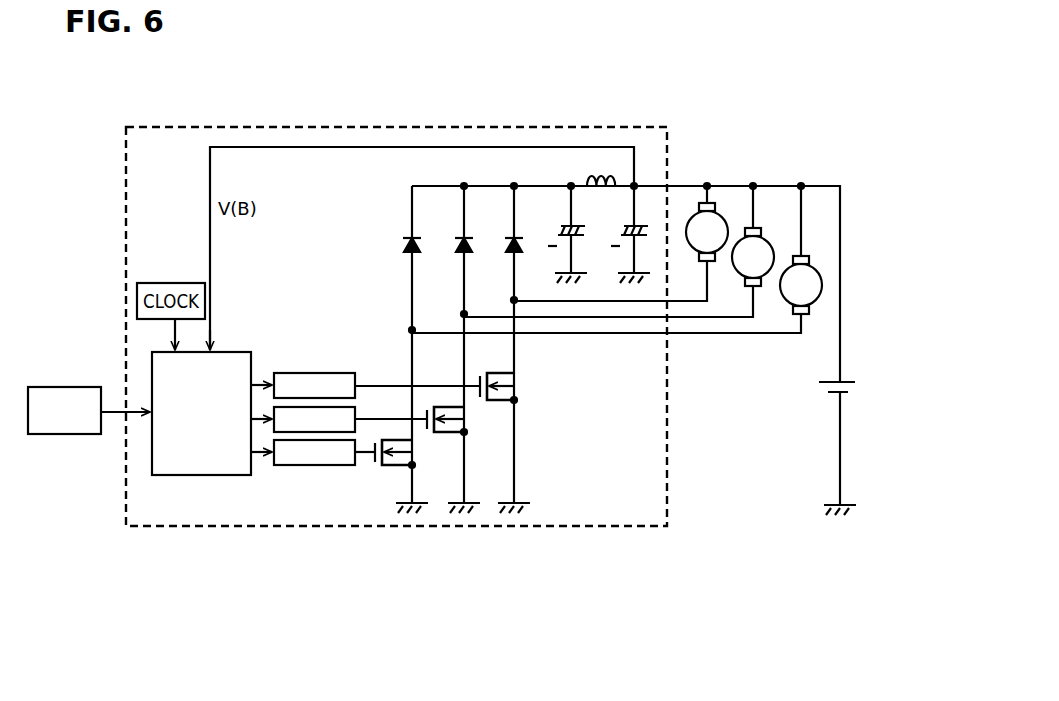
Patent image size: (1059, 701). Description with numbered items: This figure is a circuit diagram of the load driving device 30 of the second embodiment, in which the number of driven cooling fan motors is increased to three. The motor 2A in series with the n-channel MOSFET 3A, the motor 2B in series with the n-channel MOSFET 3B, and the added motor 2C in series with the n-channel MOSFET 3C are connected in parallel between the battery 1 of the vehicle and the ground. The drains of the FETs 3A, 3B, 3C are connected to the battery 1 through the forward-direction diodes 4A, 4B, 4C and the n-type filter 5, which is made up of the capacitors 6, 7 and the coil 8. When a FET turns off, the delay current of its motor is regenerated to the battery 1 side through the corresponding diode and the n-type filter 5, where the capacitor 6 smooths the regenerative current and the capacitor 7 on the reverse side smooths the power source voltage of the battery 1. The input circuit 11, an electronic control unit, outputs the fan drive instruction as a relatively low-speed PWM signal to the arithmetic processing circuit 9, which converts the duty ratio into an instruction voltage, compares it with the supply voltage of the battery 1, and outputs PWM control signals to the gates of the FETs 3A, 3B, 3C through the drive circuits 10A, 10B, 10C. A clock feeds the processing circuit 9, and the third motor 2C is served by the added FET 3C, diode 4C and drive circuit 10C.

The load driving device 30 is at (389, 126).
The arithmetic processing circuit 9 is at (184, 477).
The input circuit 11 is at (63, 386).
The drive circuit 10A is at (315, 373).
The drive circuit 10B is at (355, 407).
The drive circuit 10C is at (310, 465).
The n-channel MOSFET 3A is at (517, 402).
The n-channel MOSFET 3B is at (467, 434).
The n-channel MOSFET 3C is at (410, 468).
The diode 4A is at (506, 237).
The diode 4B is at (456, 237).
The diode 4C is at (404, 237).
The capacitor 6 is at (566, 223).
The capacitor 7 is at (628, 223).
The coil 8 is at (590, 171).
The n-type filter 5 is at (613, 164).
The motor 2A is at (727, 226).
The motor 2B is at (773, 250).
The motor 2C is at (821, 278).
The battery 1 is at (856, 388).